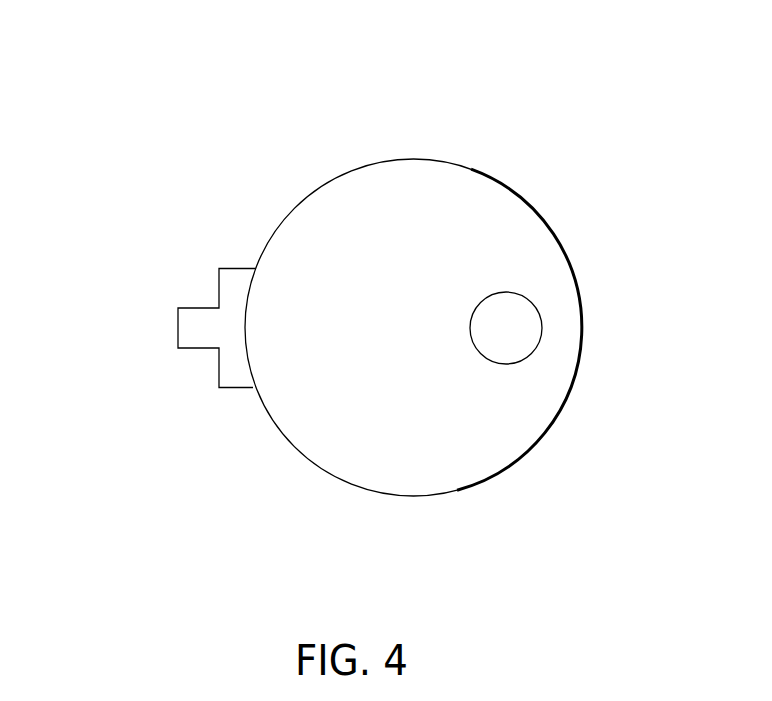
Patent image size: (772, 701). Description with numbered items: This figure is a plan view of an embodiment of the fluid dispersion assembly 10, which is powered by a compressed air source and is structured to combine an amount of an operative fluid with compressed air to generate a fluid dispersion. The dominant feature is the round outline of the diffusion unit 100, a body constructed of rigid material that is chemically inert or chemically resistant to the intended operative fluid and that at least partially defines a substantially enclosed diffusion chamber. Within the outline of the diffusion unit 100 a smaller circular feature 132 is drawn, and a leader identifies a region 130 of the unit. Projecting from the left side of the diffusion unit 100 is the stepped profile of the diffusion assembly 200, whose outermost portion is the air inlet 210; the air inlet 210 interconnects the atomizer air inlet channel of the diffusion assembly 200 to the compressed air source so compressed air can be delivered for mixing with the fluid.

The fluid dispersion assembly 10 is at (205, 152).
The diffusion unit 100 is at (497, 490).
The end wall 130 is at (475, 197).
The aperture 132 is at (510, 330).
The diffusion assembly 200 is at (208, 392).
The air inlet 210 is at (160, 338).